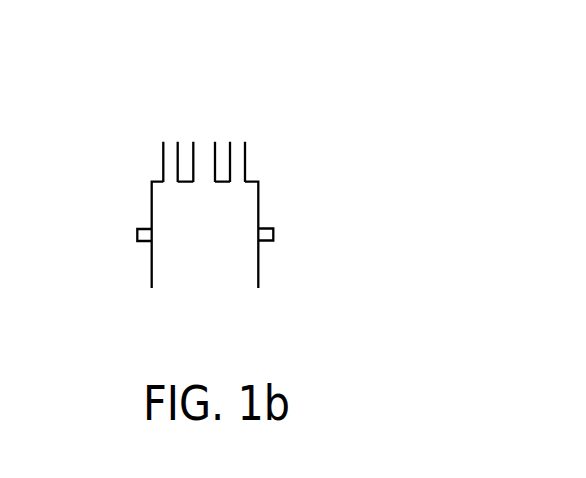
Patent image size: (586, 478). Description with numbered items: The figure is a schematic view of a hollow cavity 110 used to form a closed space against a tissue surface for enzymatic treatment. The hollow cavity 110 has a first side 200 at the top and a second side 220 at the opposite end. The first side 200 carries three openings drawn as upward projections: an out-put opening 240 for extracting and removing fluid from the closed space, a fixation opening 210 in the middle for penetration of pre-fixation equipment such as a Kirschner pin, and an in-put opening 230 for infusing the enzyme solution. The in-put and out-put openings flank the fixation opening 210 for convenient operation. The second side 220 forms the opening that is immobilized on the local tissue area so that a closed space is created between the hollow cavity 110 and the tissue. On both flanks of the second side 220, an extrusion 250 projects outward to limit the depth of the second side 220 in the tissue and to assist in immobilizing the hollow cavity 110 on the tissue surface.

The hollow cavity 110 is at (137, 182).
The first side 200 is at (260, 50).
The fixation opening 210 is at (202, 147).
The second side 220 is at (259, 258).
The in-put opening 230 is at (238, 147).
The out-put opening 240 is at (169, 147).
The extrusion 250 is at (273, 232).